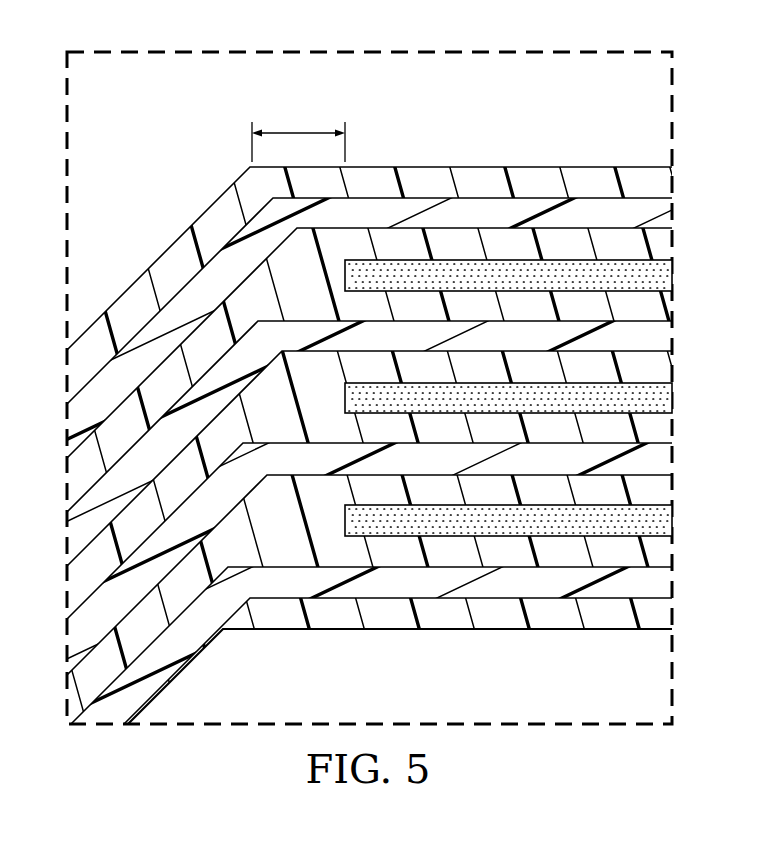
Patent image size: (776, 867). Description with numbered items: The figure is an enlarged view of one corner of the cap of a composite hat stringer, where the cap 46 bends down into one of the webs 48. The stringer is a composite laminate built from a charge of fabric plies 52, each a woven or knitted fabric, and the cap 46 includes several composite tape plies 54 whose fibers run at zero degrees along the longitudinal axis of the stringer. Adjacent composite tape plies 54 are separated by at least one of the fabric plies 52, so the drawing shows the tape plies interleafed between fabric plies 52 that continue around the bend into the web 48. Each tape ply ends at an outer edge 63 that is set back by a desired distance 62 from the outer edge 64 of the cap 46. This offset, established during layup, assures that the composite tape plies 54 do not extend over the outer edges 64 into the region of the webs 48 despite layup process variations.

The cap 46 is at (477, 166).
The web 48 is at (208, 290).
The fabric ply 52 is at (193, 300).
The composite tape ply 54 is at (666, 268).
The desired distance 62 is at (297, 131).
The outer edge of the composite tape ply 63 is at (336, 254).
The outer edge of the cap 64 is at (243, 160).